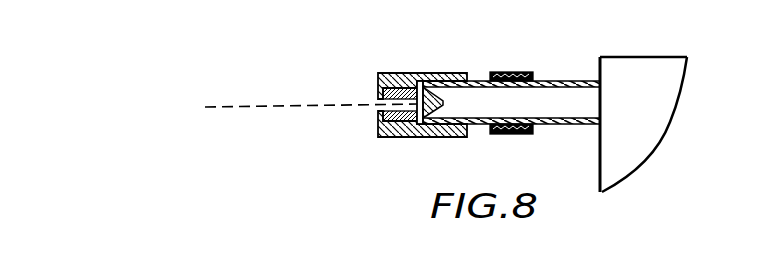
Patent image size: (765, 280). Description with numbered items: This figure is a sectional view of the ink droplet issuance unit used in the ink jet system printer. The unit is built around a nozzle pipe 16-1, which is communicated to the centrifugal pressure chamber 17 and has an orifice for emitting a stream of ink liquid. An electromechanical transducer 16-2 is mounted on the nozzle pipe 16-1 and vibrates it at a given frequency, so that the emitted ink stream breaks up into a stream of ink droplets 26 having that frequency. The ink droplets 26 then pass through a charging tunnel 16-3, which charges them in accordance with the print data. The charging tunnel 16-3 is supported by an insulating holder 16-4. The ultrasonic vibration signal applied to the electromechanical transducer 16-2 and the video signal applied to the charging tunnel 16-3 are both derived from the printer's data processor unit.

The nozzle pipe 16-1 is at (565, 79).
The electromechanical transducer 16-2 is at (498, 72).
The charging tunnel 16-3 is at (378, 101).
The insulating holder 16-4 is at (456, 137).
The ink droplets 26 is at (414, 128).
The centrifugal pressure chamber 17 is at (637, 87).